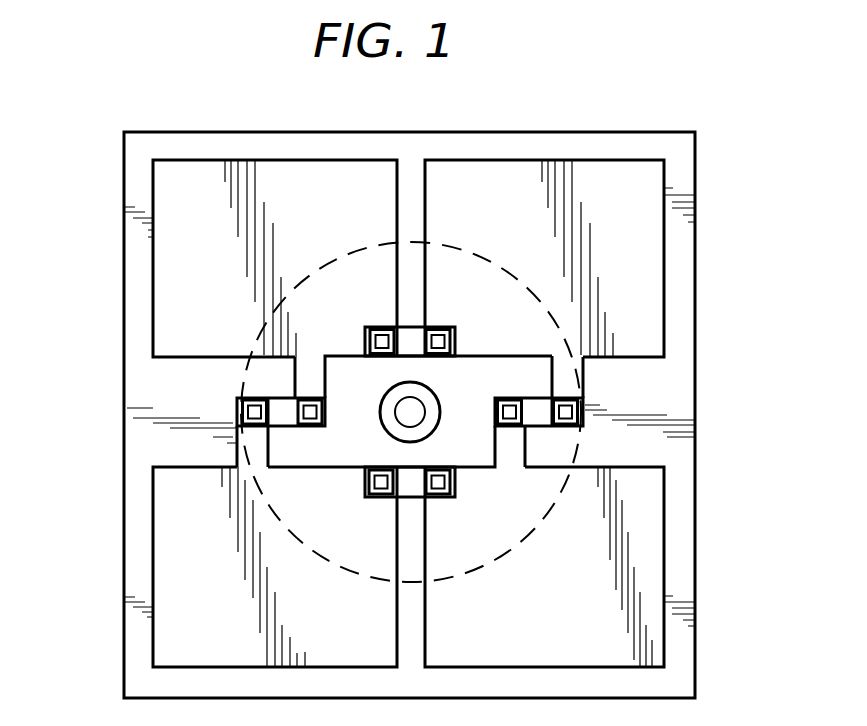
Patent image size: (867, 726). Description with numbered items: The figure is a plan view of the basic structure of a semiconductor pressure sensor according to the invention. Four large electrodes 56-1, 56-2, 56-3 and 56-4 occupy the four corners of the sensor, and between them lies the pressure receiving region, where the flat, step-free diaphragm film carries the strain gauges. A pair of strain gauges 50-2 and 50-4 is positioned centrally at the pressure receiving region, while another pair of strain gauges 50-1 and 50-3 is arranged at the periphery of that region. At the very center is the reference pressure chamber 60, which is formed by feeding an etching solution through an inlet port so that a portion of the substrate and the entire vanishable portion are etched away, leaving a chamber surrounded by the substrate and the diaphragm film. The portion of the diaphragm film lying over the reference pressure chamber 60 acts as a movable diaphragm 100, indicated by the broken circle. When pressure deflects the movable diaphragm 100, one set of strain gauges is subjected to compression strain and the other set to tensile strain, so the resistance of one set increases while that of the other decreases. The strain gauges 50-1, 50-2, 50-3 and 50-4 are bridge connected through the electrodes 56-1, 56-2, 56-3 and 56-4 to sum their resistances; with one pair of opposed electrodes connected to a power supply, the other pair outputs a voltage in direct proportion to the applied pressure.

The electrode 56-1 is at (637, 273).
The electrode 56-2 is at (645, 590).
The electrode 56-3 is at (167, 575).
The electrode 56-4 is at (183, 234).
The strain gauge 50-1 is at (535, 415).
The strain gauge 50-2 is at (410, 483).
The strain gauge 50-3 is at (285, 413).
The strain gauge 50-4 is at (415, 330).
The reference pressure chamber 60 is at (413, 411).
The movable diaphragm 100 is at (549, 503).